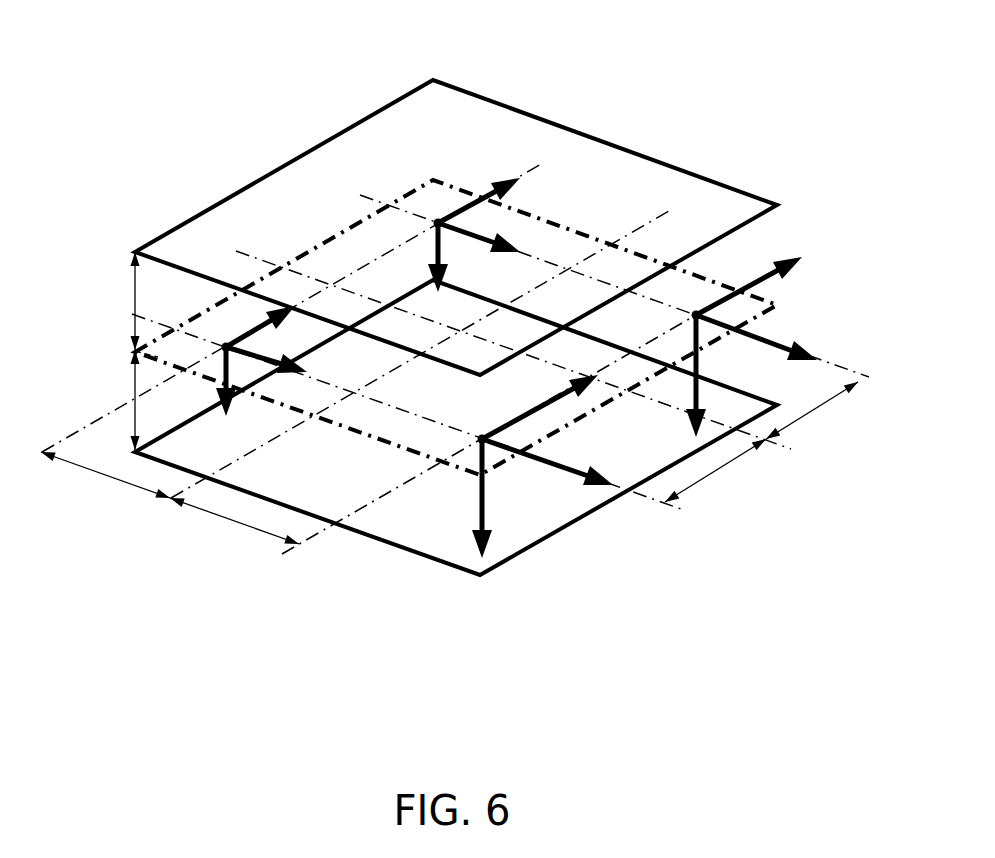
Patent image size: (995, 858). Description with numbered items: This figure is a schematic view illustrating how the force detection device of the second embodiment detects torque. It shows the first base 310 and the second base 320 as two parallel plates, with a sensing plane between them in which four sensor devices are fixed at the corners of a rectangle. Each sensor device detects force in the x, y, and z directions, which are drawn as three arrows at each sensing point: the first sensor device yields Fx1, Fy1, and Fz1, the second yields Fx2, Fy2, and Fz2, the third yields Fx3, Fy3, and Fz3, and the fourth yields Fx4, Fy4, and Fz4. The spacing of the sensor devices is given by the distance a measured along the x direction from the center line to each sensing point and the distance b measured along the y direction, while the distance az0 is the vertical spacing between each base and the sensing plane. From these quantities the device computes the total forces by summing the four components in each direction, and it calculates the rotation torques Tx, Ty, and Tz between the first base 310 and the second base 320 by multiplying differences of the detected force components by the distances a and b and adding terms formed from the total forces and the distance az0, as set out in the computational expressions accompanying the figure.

The first base 310 is at (428, 565).
The second base 320 is at (460, 90).
The x-direction force at first sensor device Fx1 is at (749, 280).
The y-direction force at first sensor device Fy1 is at (765, 337).
The z-direction force at first sensor device Fz1 is at (682, 376).
The x-direction force at second sensor device Fx2 is at (555, 462).
The y-direction force at second sensor device Fy2 is at (540, 407).
The z-direction force at second sensor device Fz2 is at (468, 498).
The x-direction force at third sensor device Fx3 is at (290, 366).
The y-direction force at third sensor device Fy3 is at (253, 321).
The z-direction force at third sensor device Fz3 is at (239, 398).
The x-direction force at fourth sensor device Fx4 is at (487, 181).
The y-direction force at fourth sensor device Fy4 is at (497, 238).
The z-direction force at fourth sensor device Fz4 is at (426, 269).
The distance a is at (761, 442).
The distance b is at (170, 498).
The distance az0 is at (122, 351).